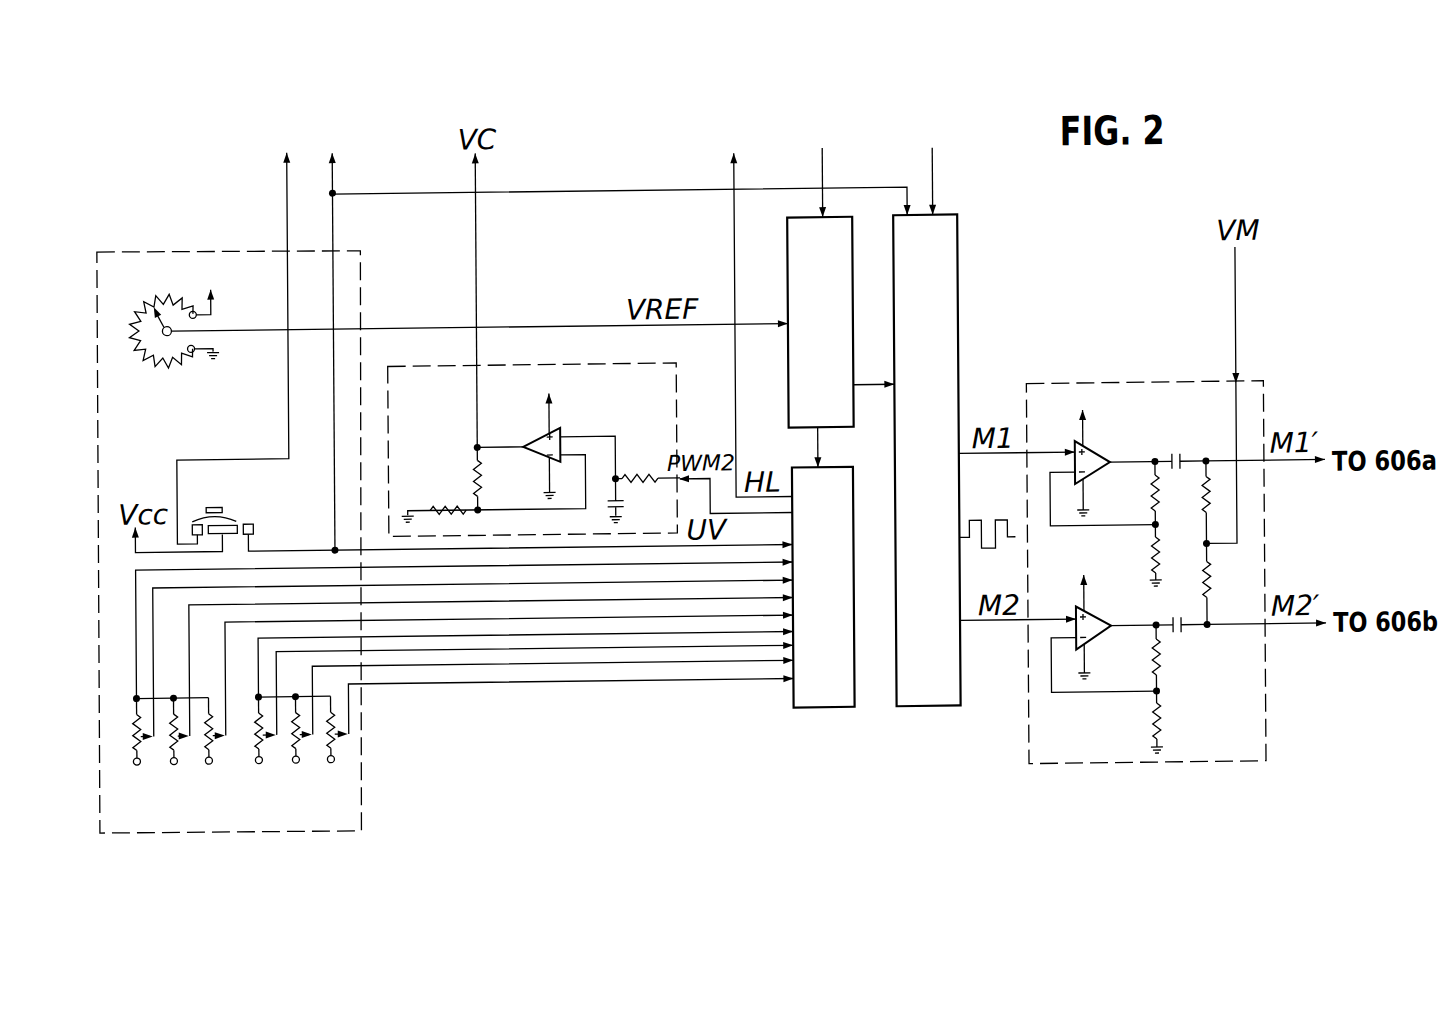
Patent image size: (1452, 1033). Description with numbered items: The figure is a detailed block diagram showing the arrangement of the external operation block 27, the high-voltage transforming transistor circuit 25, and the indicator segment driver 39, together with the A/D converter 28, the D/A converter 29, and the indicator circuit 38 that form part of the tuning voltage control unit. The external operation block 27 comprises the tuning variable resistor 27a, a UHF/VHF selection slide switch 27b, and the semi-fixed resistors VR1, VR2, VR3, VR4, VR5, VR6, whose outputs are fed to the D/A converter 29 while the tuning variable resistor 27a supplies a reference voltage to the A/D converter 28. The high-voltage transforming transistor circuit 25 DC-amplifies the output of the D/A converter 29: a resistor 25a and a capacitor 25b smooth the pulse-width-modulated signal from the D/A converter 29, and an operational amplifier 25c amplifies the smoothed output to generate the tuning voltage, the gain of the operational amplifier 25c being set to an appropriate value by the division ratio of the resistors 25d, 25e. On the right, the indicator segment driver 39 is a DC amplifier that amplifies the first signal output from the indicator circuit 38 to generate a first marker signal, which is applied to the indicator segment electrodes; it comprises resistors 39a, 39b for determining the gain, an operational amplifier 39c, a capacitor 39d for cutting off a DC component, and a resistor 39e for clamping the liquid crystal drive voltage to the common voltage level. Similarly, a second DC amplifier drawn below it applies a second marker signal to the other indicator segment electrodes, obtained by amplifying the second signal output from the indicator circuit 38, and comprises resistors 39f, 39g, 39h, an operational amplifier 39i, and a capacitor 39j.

The external operation block 27 is at (150, 256).
The tuning variable resistor 27a is at (149, 358).
The UHF/VHF selection slide switch 27b is at (229, 518).
The semi-fixed resistor VR1 is at (131, 768).
The semi-fixed resistor VR2 is at (171, 768).
The semi-fixed resistor VR3 is at (204, 768).
The semi-fixed resistor VR4 is at (256, 768).
The semi-fixed resistor VR5 is at (291, 768).
The semi-fixed resistor VR6 is at (328, 768).
The high-voltage transforming transistor circuit 25 is at (678, 403).
The resistor 25a is at (640, 481).
The capacitor 25b is at (621, 508).
The operational amplifier 25c is at (547, 438).
The resistor 25d is at (480, 478).
The resistor 25e is at (446, 512).
The A/D converter 28 is at (856, 259).
The D/A converter 29 is at (856, 500).
The indicator circuit 38 is at (962, 254).
The indicator segment driver 39 is at (1174, 397).
The resistor 39a is at (1150, 516).
The resistor 39b is at (1150, 572).
The operational amplifier 39c is at (1090, 460).
The capacitor 39d is at (1180, 450).
The resistor 39e is at (1203, 505).
The resistor 39f is at (1160, 674).
The resistor 39g is at (1158, 733).
The resistor 39h is at (1210, 593).
The operational amplifier 39i is at (1095, 632).
The capacitor 39j is at (1176, 651).